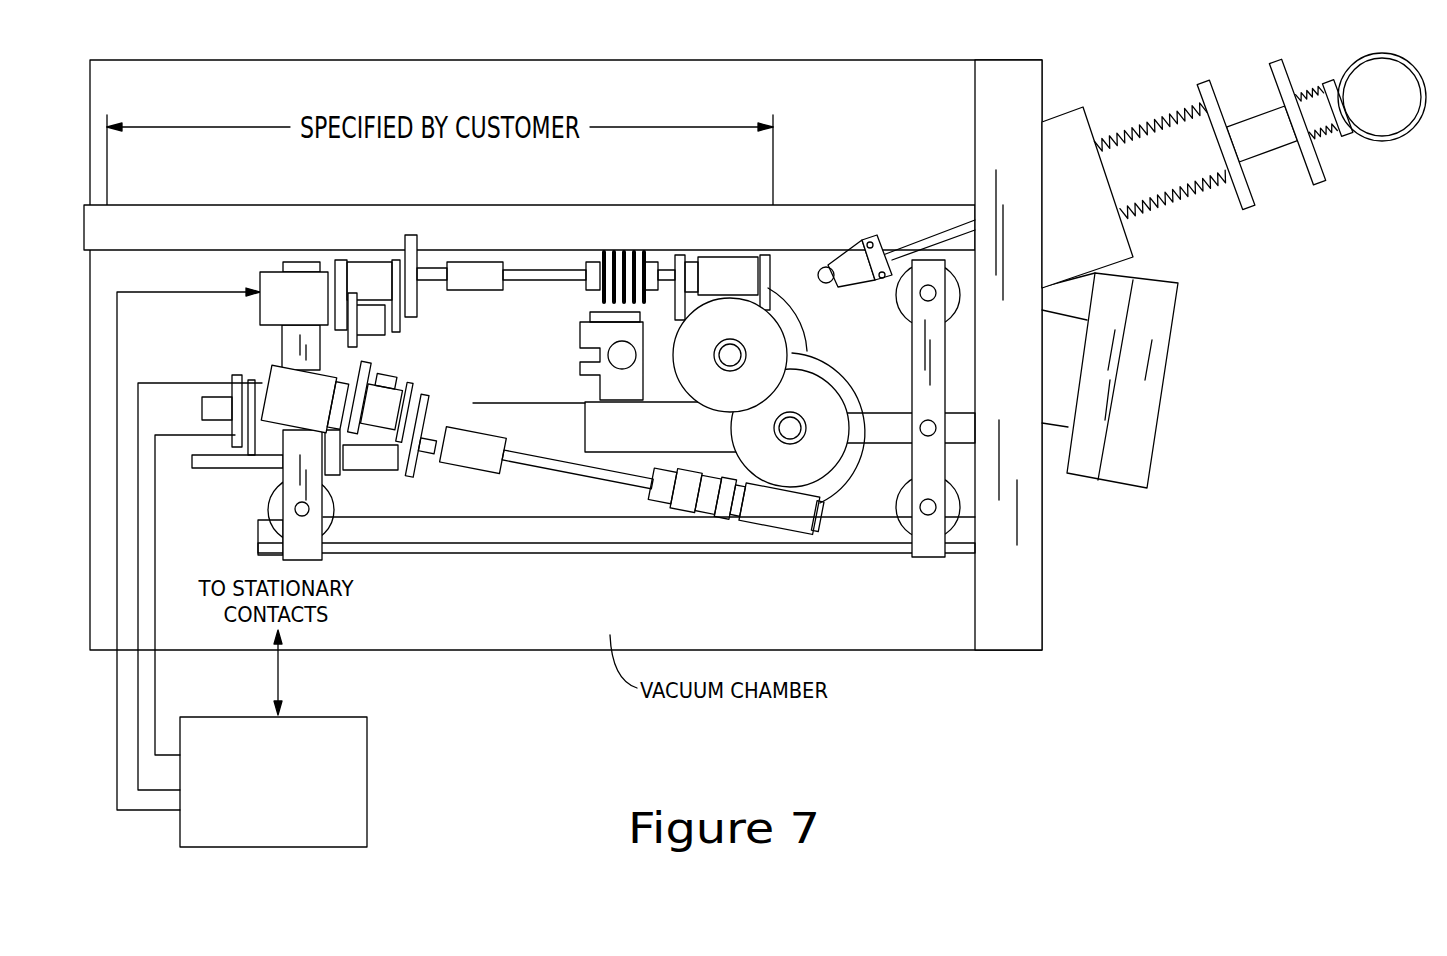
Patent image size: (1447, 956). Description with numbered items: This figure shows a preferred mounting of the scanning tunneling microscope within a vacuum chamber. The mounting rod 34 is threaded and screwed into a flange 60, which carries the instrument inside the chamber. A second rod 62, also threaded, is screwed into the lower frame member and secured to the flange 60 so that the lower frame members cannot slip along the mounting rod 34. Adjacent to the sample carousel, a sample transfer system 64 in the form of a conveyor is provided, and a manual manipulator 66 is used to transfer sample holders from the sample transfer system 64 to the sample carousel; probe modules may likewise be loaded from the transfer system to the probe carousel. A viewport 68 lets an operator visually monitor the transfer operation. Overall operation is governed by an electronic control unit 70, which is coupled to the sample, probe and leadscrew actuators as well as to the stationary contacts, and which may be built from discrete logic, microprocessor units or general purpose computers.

The mounting rod 34 is at (657, 540).
The flange 60 is at (1025, 613).
The second rod 62 is at (962, 428).
The sample transfer system 64 is at (843, 212).
The manual manipulator 66 is at (1417, 65).
The viewport 68 is at (1152, 392).
The electronic control unit 70 is at (360, 808).